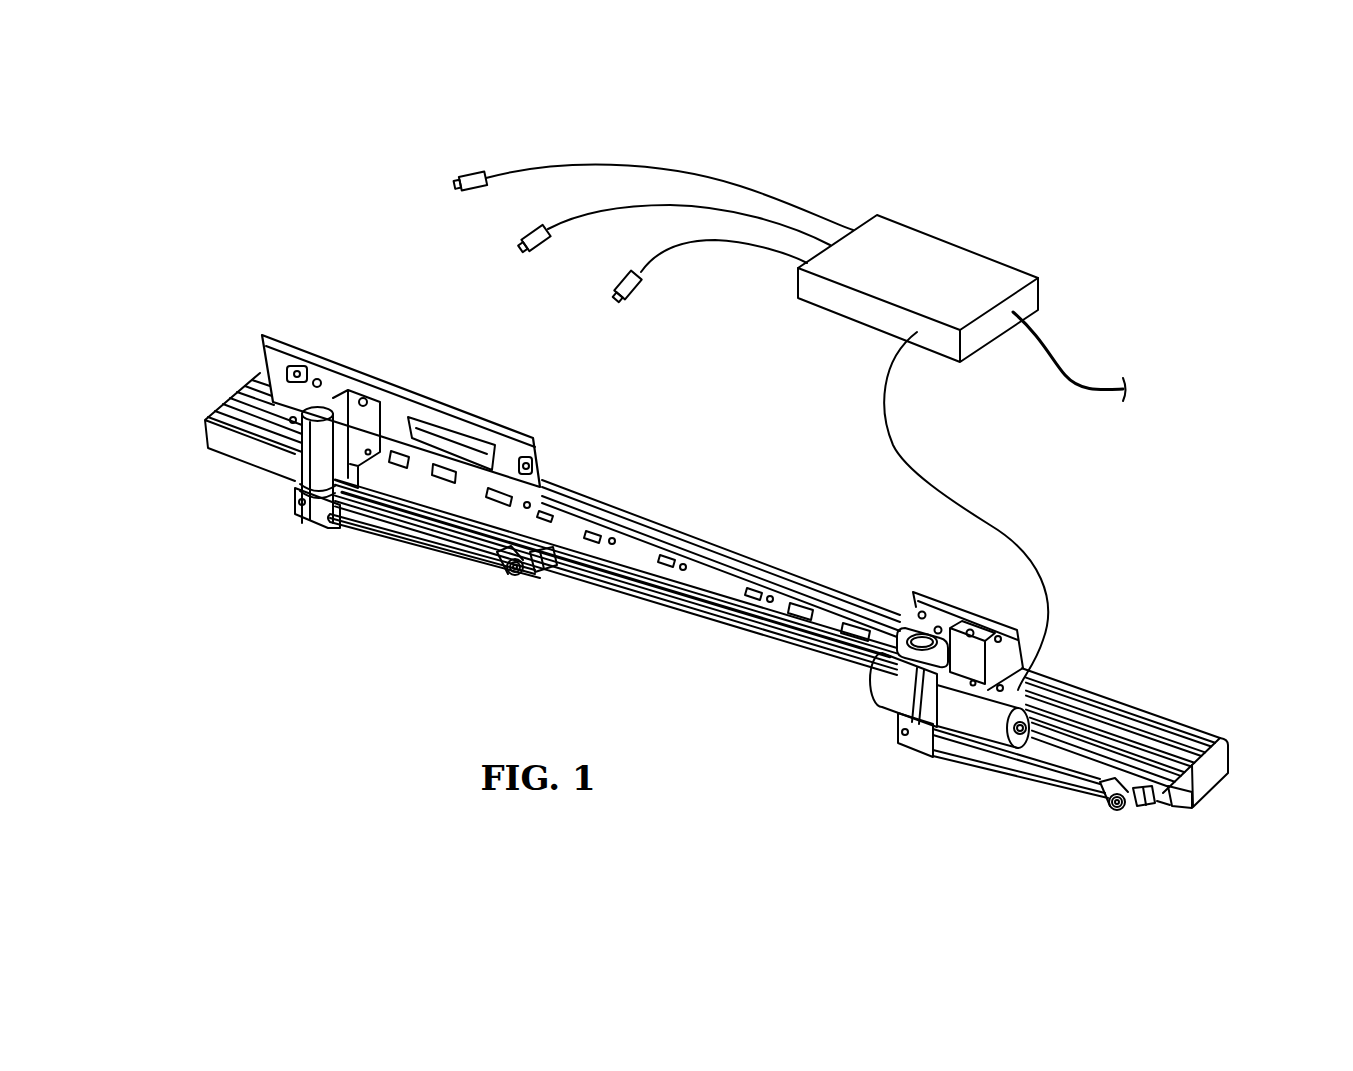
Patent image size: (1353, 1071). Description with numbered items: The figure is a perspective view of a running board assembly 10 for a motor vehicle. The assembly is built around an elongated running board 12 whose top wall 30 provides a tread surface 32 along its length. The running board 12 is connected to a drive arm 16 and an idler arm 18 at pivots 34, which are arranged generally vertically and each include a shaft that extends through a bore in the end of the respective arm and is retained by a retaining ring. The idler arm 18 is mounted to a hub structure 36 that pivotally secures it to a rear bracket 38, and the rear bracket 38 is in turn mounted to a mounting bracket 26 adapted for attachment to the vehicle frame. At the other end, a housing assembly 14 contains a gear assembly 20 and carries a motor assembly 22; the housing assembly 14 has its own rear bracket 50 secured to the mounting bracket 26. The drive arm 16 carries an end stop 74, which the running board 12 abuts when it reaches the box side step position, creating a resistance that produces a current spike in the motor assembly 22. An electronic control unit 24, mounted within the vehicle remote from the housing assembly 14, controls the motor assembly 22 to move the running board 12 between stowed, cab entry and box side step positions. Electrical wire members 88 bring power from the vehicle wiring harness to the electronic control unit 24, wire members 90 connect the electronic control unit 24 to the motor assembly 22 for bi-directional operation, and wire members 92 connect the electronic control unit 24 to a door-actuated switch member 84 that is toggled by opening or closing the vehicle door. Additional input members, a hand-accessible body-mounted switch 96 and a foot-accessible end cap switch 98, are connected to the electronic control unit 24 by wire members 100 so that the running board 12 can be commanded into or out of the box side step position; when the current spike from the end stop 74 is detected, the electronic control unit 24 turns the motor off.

The running board assembly 10 is at (633, 662).
The running board 12 is at (633, 508).
The housing assembly 14 is at (896, 601).
The drive arm 16 is at (1012, 786).
The idler arm 18 is at (415, 553).
The gear assembly 20 is at (871, 699).
The motor assembly 22 is at (996, 758).
The electronic control unit 24 is at (967, 250).
The mounting bracket 26 is at (710, 583).
The top wall 30 is at (1230, 745).
The tread surface 32 is at (1120, 692).
The pivots 34 is at (548, 570).
The hub structure 36 is at (293, 455).
The rear bracket 38 is at (350, 382).
The rear bracket 50 is at (948, 614).
The end stop 74 is at (502, 574).
The switch member 84 is at (468, 177).
The electrical wire members 88 is at (1068, 384).
The wire members 90 is at (1042, 588).
The wire members 92 is at (699, 174).
The body-mounted switch 96 is at (534, 250).
The end cap switch 98 is at (631, 300).
The wire members 100 is at (667, 248).